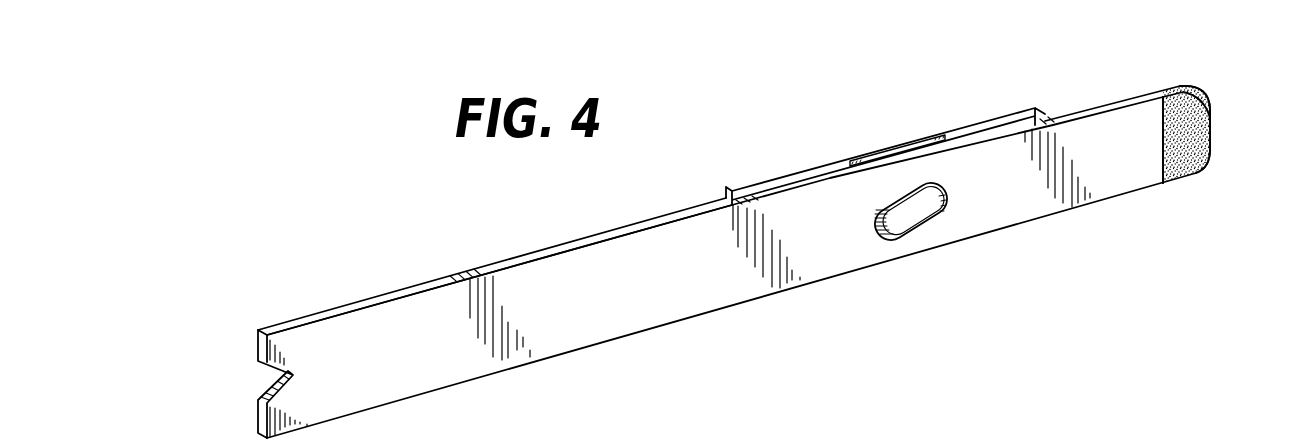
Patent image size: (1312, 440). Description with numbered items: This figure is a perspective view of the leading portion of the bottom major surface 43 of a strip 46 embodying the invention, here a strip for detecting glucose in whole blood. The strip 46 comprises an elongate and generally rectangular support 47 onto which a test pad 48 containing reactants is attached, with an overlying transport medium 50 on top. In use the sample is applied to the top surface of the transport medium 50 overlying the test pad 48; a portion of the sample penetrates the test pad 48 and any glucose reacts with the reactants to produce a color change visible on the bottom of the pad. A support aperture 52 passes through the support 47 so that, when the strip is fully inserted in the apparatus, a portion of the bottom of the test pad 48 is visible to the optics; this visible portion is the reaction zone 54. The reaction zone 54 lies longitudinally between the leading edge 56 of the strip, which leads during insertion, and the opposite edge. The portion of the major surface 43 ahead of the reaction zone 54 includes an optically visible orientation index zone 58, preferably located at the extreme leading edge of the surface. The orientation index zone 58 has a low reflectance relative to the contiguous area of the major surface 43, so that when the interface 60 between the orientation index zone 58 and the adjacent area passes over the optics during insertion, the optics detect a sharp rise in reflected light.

The bottom major surface 43 is at (660, 293).
The strip 46 is at (388, 237).
The support 47 is at (575, 247).
The test pad 48 is at (910, 150).
The transport medium 50 is at (802, 171).
The support aperture 52 is at (878, 208).
The reaction zone 54 is at (920, 208).
The leading edge 56 is at (1208, 132).
The orientation index zone 58 is at (1187, 157).
The interface 60 is at (1160, 135).